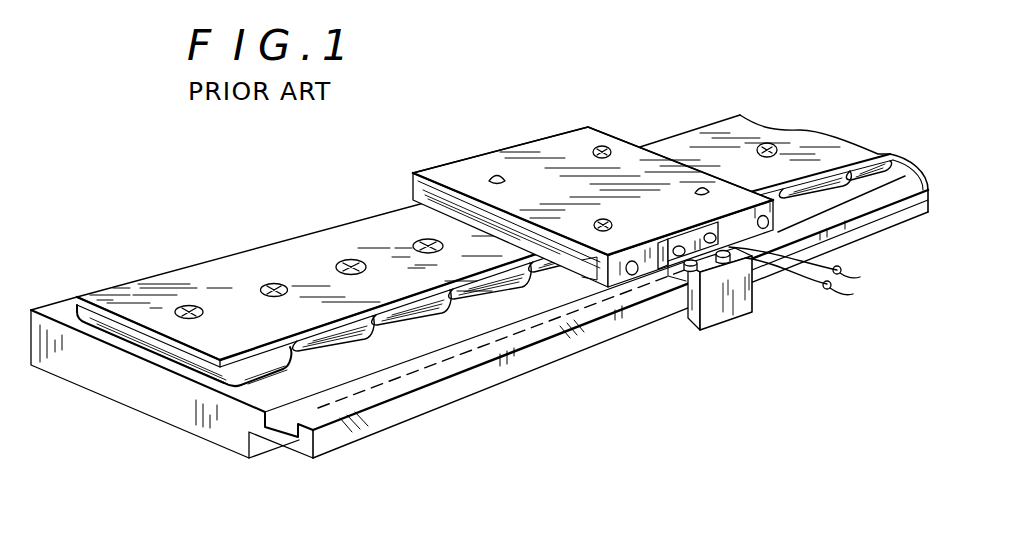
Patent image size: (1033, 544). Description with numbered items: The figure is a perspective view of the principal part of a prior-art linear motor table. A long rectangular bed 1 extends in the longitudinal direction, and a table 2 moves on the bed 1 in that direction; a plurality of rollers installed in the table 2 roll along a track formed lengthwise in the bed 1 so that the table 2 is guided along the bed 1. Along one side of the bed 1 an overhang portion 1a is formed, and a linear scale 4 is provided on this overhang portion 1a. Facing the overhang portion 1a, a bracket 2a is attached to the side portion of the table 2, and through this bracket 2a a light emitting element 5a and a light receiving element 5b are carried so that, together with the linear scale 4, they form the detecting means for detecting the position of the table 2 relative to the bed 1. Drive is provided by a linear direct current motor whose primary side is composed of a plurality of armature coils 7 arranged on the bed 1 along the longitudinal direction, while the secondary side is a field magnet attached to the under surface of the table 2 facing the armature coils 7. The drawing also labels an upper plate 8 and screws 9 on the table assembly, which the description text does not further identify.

The bed 1 is at (479, 311).
The overhang portion 1a is at (549, 356).
The table 2 is at (523, 160).
The bracket 2a is at (733, 307).
The linear scale 4 is at (567, 315).
The light emitting element 5a is at (700, 266).
The light receiving element 5b is at (733, 250).
The armature coils 7 is at (413, 316).
The table plate 8 is at (190, 277).
The screws 9 is at (338, 260).